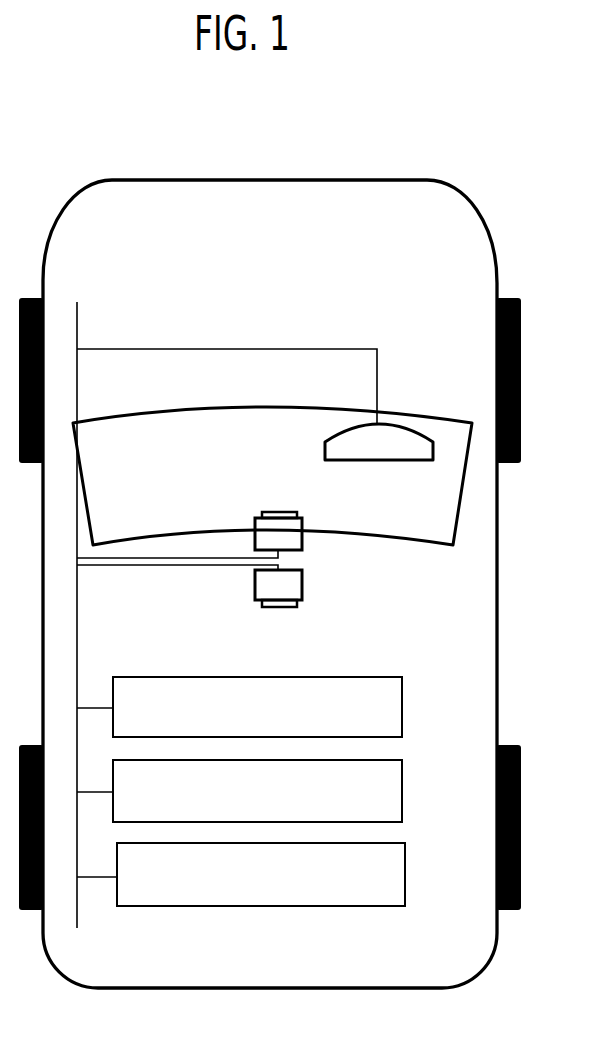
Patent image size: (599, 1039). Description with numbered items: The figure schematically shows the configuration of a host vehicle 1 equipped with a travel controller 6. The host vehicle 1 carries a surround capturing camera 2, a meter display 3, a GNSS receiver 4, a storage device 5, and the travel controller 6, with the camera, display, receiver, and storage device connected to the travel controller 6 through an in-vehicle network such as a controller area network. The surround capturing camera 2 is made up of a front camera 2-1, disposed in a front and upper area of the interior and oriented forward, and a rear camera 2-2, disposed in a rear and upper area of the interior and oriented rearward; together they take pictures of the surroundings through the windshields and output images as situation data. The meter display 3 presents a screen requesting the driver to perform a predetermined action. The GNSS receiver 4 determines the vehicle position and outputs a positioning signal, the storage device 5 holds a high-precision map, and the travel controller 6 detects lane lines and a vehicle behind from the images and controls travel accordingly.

The host vehicle 1 is at (404, 170).
The surround capturing camera 2 is at (256, 574).
The front camera 2-1 is at (302, 538).
The rear camera 2-2 is at (302, 583).
The meter display 3 is at (354, 424).
The GNSS receiver 4 is at (402, 708).
The storage device 5 is at (402, 792).
The travel controller 6 is at (405, 887).